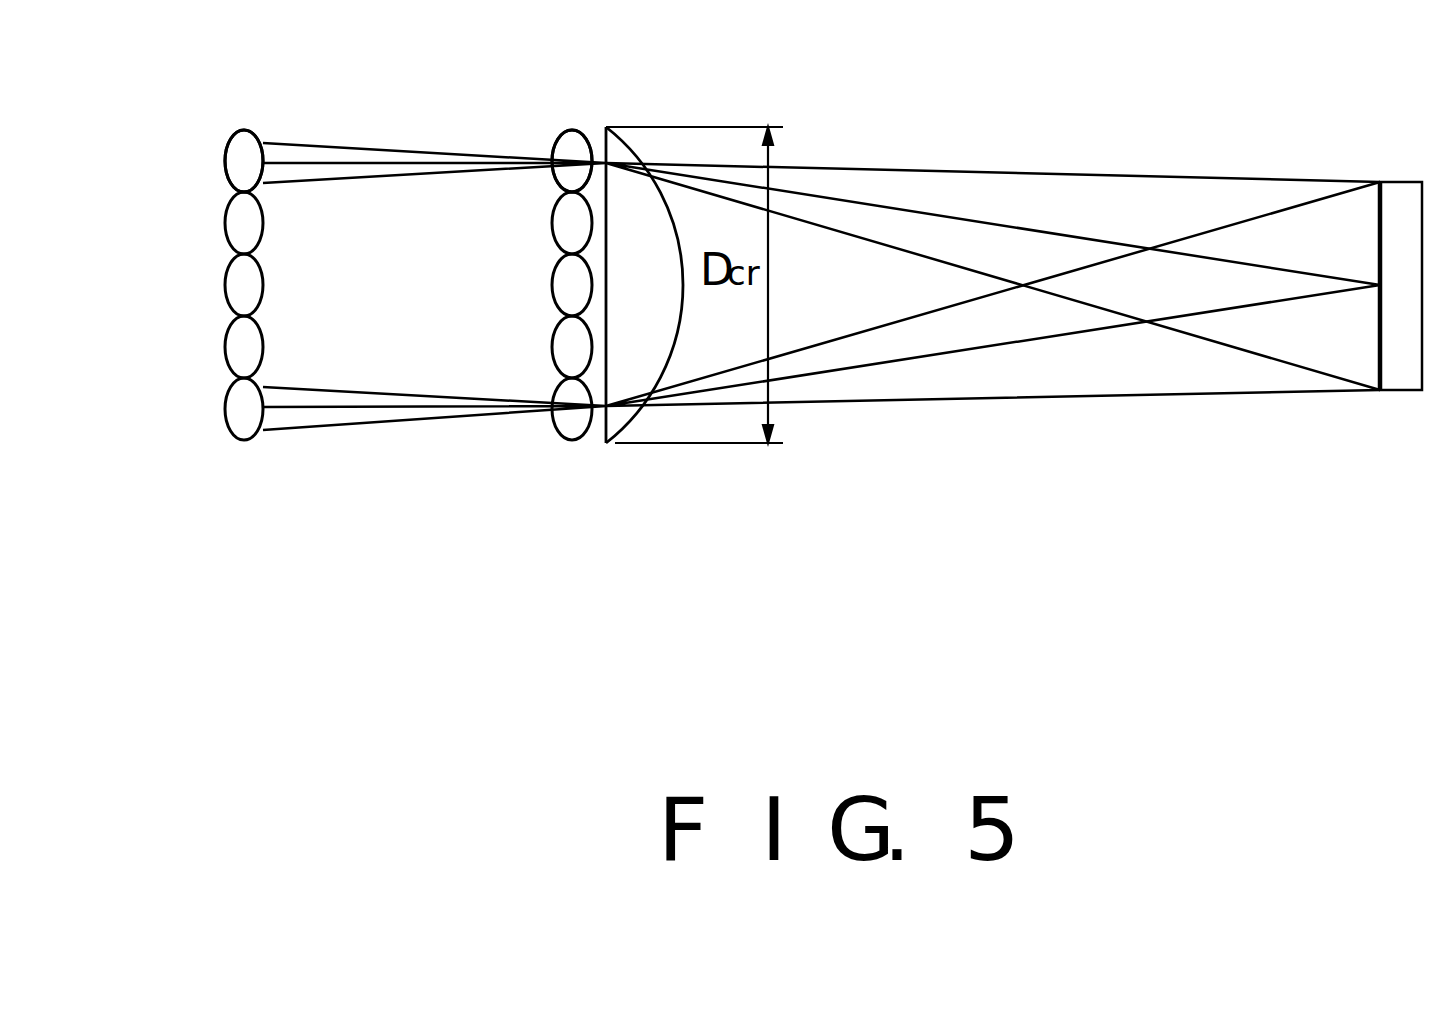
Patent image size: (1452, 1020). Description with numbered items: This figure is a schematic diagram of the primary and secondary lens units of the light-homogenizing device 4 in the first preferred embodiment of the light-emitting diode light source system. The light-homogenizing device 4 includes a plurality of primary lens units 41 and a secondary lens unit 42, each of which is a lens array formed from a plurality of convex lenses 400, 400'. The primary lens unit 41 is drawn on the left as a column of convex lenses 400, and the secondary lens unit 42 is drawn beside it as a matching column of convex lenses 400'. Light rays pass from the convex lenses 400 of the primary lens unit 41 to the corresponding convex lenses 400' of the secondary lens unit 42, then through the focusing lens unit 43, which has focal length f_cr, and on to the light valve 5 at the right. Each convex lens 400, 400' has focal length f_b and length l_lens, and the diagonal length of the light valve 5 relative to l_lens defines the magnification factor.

The light-homogenizing device 4 is at (427, 577).
The primary lens unit 41 is at (232, 447).
The secondary lens unit 42 is at (572, 445).
The focusing lens unit 43 is at (645, 443).
The convex lens 400 is at (219, 114).
The convex lens 400' is at (526, 115).
The light valve 5 is at (1403, 377).